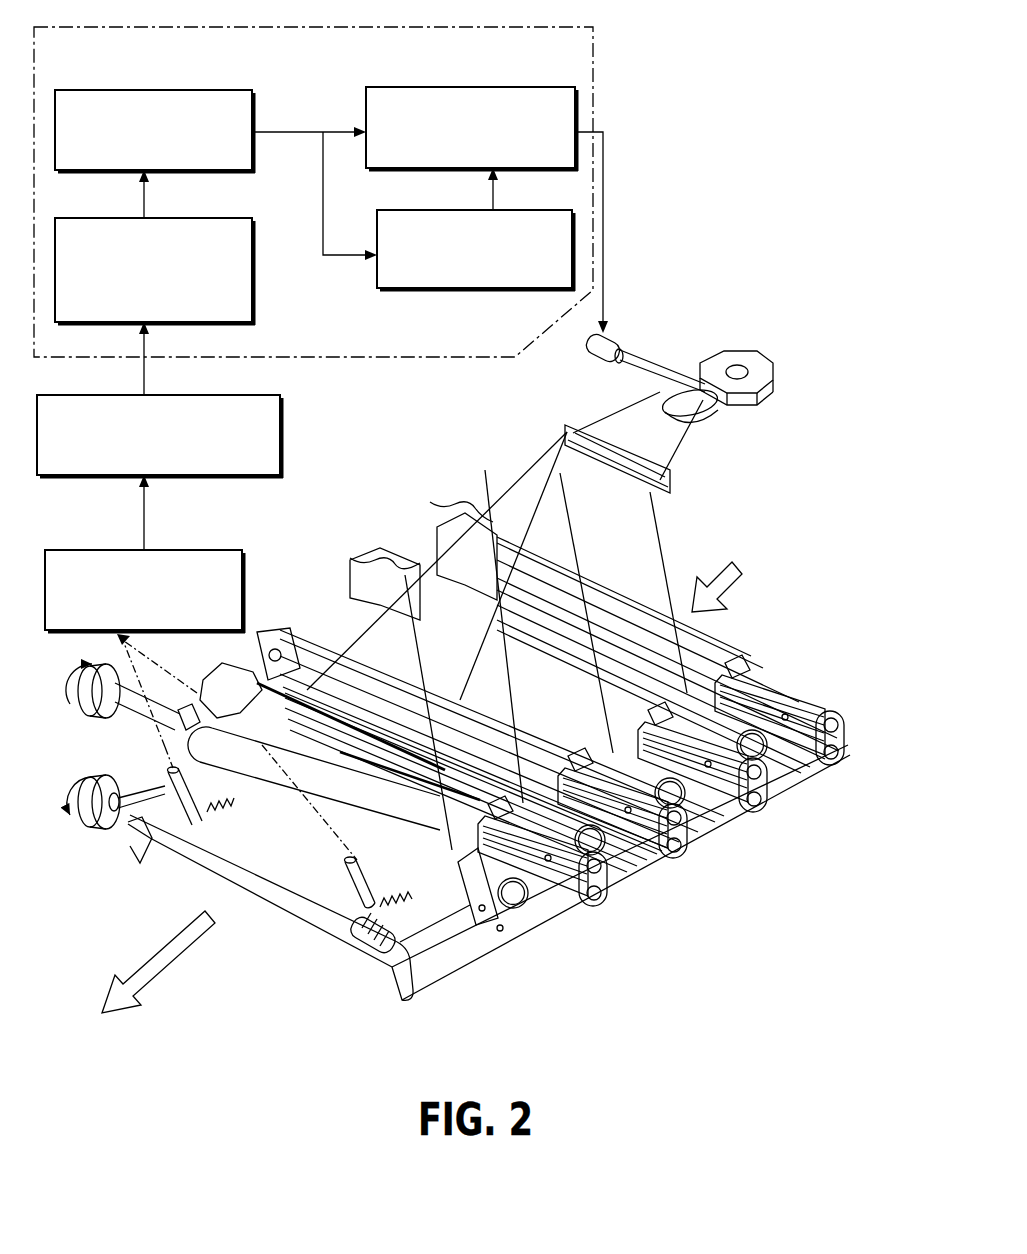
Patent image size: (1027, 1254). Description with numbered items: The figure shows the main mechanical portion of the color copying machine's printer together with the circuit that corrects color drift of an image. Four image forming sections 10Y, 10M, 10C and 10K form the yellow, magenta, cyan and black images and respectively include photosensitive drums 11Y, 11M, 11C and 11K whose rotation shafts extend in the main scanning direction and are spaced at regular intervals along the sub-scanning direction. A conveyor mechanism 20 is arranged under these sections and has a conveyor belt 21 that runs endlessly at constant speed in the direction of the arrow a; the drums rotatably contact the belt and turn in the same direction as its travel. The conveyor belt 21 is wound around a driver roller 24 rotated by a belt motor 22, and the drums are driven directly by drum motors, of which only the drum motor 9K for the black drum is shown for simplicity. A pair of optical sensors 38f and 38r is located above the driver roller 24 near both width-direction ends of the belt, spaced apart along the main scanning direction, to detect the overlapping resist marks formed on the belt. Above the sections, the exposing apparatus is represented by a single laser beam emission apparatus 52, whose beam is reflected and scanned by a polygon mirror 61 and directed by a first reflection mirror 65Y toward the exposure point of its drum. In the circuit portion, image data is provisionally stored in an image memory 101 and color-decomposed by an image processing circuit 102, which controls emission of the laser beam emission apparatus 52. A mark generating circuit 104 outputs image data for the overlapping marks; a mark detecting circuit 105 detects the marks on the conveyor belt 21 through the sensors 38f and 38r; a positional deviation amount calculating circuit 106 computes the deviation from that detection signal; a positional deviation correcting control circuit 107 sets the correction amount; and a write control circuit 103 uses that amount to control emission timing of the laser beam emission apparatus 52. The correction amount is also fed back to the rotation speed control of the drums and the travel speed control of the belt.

The image memory 101 is at (472, 103).
The image processing circuit 102 is at (489, 87).
The write control circuit 103 is at (254, 104).
The mark generating circuit 104 is at (455, 290).
The mark detecting circuit 105 is at (205, 550).
The positional deviation amount calculating circuit 106 is at (310, 457).
The positional deviation correcting control circuit 107 is at (254, 298).
The laser beam emission apparatus 52 is at (622, 339).
The polygon mirror 61 is at (750, 362).
The first reflection mirror 65Y is at (677, 494).
The arrow a is at (741, 593).
The drum motor 9K is at (90, 706).
The belt motor 22 is at (90, 813).
The sensor 38r is at (120, 830).
The sensor 38f is at (350, 887).
The driver roller 24 is at (360, 945).
The conveyor mechanism 20 is at (327, 1002).
The conveyor belt 21 is at (438, 890).
The first image forming section 10Y is at (843, 765).
The second image forming section 10M is at (767, 815).
The third image forming section 10C is at (685, 860).
The fourth image forming section 10K is at (600, 907).
The photosensitive drum 11Y is at (770, 760).
The photosensitive drum 11M is at (692, 808).
The photosensitive drum 11C is at (622, 858).
The photosensitive drum 11K is at (523, 912).